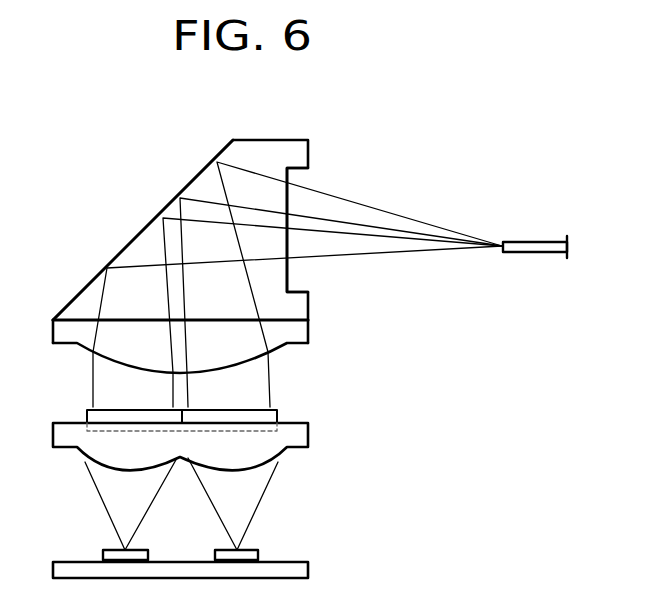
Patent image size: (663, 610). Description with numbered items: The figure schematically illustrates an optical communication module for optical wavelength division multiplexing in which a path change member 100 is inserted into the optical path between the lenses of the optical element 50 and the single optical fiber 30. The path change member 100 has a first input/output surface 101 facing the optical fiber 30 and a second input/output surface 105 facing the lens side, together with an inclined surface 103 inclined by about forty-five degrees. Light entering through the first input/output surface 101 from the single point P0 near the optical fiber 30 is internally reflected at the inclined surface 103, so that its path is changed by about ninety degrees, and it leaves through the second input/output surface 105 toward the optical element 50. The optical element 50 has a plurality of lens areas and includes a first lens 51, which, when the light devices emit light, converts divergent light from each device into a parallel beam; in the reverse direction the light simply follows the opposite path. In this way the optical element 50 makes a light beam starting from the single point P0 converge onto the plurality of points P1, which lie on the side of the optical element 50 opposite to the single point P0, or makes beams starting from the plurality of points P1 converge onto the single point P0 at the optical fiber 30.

The path change member 100 is at (272, 138).
The first input/output surface 101 is at (289, 175).
The inclined surface 103 is at (135, 237).
The second input/output surface 105 is at (283, 321).
The optical fiber 30 is at (528, 243).
The first lens 51 is at (303, 435).
The optical element 50 is at (320, 456).
The single point P0 is at (502, 252).
The plurality of points P1 is at (297, 530).